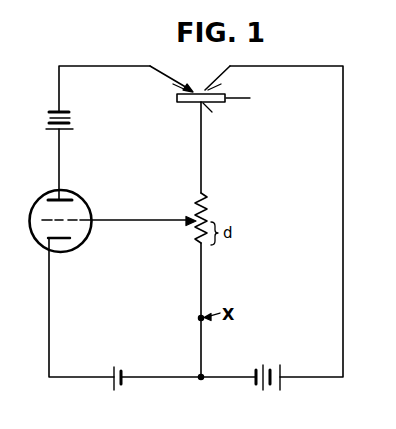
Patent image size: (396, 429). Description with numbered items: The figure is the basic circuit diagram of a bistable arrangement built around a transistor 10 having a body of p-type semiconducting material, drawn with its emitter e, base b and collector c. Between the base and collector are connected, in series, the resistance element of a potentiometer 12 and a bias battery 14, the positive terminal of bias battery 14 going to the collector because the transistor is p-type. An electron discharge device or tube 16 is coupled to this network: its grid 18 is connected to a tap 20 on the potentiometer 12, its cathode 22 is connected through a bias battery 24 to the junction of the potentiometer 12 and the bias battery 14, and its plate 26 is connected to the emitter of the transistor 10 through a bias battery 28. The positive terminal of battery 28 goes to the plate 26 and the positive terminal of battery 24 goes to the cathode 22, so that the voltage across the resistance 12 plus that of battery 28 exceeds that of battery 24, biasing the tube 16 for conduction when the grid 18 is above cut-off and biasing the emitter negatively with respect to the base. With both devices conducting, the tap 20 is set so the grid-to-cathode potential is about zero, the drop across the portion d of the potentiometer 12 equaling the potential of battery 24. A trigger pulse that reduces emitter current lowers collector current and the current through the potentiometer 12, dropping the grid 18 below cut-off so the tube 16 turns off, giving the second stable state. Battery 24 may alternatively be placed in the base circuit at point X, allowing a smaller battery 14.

The transistor 10 is at (187, 103).
The potentiometer 12 is at (207, 201).
The bias battery 14 is at (268, 364).
The electron discharge device or tube 16 is at (82, 194).
The grid 18 is at (77, 222).
The tap 20 is at (190, 217).
The cathode 22 is at (58, 238).
The bias battery 24 is at (118, 366).
The plate 26 is at (50, 195).
The bias battery 28 is at (70, 114).